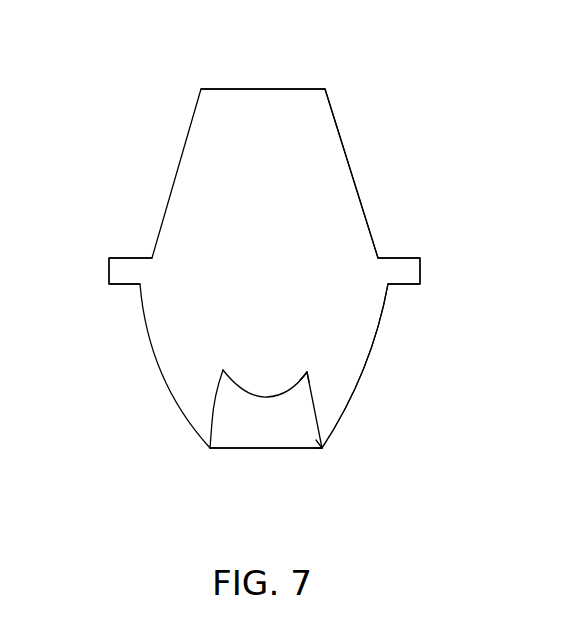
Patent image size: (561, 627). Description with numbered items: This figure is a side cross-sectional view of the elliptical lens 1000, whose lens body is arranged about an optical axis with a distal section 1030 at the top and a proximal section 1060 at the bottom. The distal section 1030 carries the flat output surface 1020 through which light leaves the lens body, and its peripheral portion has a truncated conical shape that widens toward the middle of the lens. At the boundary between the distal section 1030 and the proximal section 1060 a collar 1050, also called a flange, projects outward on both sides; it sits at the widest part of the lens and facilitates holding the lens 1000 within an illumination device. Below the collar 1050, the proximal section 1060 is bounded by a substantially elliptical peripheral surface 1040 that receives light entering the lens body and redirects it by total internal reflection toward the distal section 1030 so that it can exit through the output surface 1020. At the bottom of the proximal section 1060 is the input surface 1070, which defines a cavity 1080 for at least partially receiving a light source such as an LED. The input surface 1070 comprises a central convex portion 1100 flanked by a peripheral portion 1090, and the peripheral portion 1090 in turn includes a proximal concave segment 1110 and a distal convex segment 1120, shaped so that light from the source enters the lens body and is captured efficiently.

The lens 1000 is at (178, 506).
The output surface 1020 is at (294, 89).
The distal section 1030 is at (343, 218).
The elliptical peripheral surface 1040 is at (153, 294).
The collar 1050 is at (403, 272).
The proximal section 1060 is at (343, 328).
The input surface 1070 is at (325, 449).
The cavity 1080 is at (268, 438).
The peripheral portion 1090 is at (212, 420).
The central convex portion 1100 is at (243, 383).
The proximal concave segment 1110 is at (318, 425).
The distal convex segment 1120 is at (312, 380).